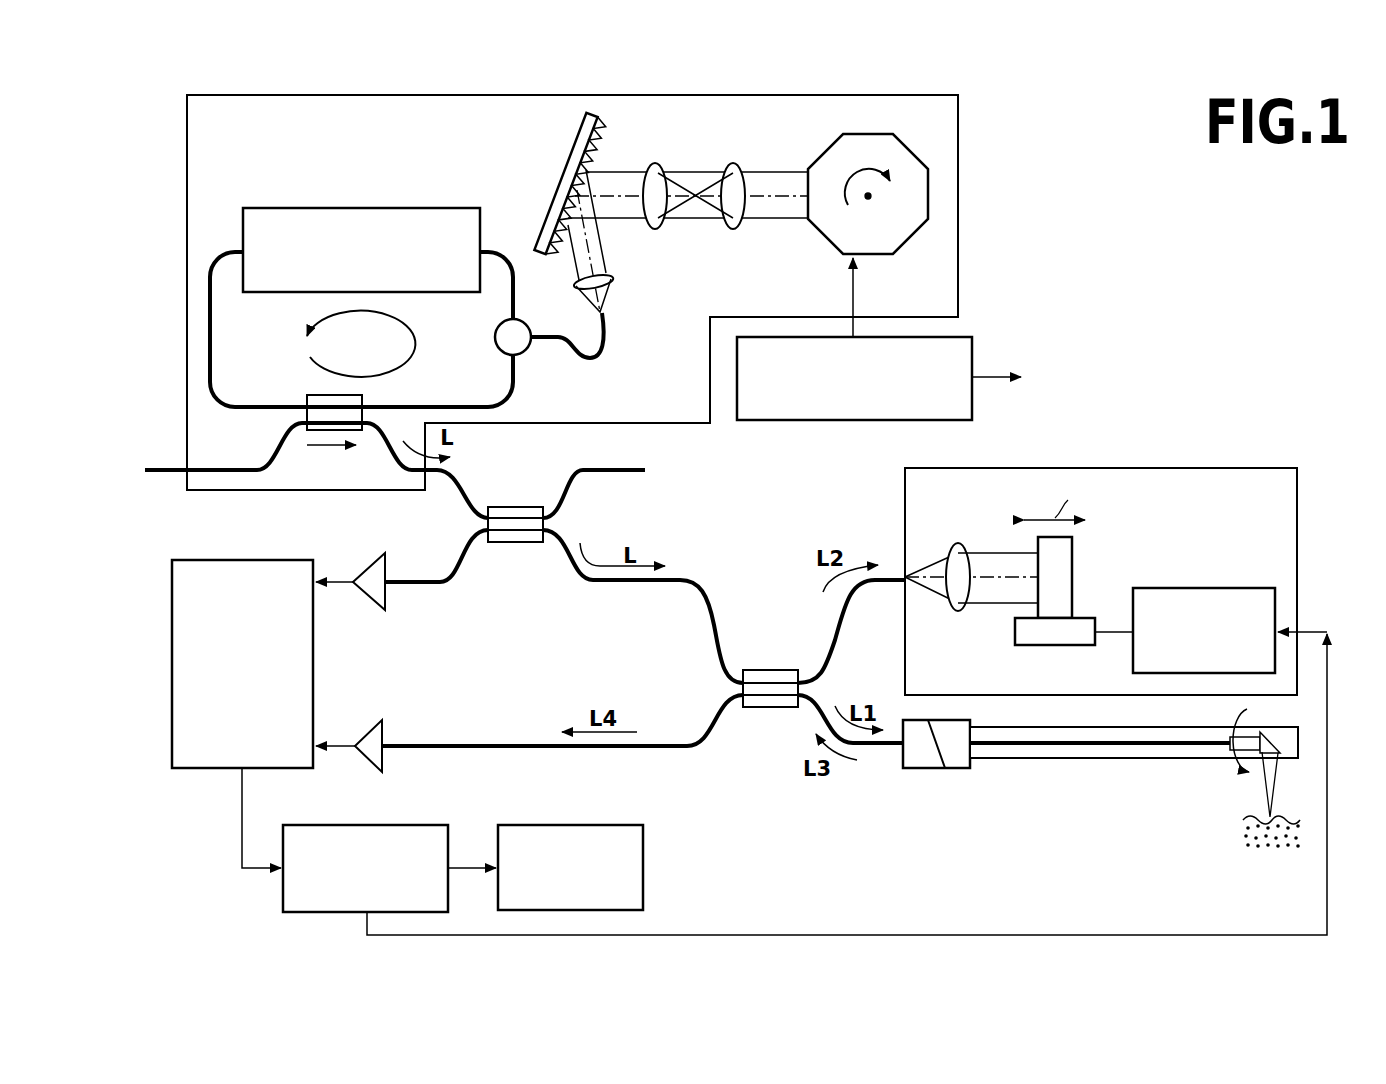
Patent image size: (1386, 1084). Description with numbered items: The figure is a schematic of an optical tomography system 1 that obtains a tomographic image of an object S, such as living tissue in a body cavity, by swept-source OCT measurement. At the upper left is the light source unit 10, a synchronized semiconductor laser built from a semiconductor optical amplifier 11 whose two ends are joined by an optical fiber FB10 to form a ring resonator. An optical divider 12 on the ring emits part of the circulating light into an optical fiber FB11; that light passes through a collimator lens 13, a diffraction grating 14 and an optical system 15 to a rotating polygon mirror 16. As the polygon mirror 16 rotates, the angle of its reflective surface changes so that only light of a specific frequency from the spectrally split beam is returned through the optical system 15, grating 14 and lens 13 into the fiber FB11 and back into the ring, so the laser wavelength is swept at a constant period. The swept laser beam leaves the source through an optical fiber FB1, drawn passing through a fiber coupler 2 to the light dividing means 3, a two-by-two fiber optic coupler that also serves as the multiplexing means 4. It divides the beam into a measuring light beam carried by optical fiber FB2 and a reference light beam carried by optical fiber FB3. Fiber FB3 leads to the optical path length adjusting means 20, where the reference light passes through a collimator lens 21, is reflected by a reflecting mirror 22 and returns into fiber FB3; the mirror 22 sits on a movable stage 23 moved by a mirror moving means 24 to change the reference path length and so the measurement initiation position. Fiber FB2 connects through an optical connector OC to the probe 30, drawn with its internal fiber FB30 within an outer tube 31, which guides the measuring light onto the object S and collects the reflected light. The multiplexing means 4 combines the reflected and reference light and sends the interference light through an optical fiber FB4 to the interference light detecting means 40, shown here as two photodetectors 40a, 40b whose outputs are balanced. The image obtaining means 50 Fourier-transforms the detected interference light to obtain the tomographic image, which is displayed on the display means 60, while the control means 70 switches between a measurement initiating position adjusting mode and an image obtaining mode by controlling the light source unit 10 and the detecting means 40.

The optical tomography system 1 is at (1124, 207).
The light source unit 10 is at (958, 195).
The semiconductor optical amplifier 11 is at (458, 208).
The optical divider 12 is at (525, 352).
The collimator lens 13 is at (616, 287).
The diffraction grating 14 is at (578, 138).
The optical system 15 is at (733, 163).
The rotating polygon mirror 16 is at (904, 254).
The optical fiber FB10 is at (209, 336).
The optical fiber FB11 is at (605, 357).
The optical fiber coupler 2 is at (523, 543).
The light dividing means 3 is at (760, 715).
The multiplexing means 4 is at (763, 708).
The optical fiber FB1 is at (457, 487).
The optical fiber FB2 is at (895, 717).
The optical fiber FB3 is at (893, 577).
The optical fiber FB4 is at (490, 745).
The optical path length adjusting means 20 is at (1297, 493).
The collimator lens 21 is at (960, 545).
The reflecting mirror 22 is at (1065, 562).
The movable stage 23 is at (1075, 640).
The mirror moving means 24 is at (1258, 588).
The probe 30 is at (1134, 771).
The probe outer tube 31 is at (1180, 760).
The probe optical fiber FB30 is at (1032, 747).
The optical connector OC is at (927, 768).
The object S is at (1285, 816).
The interference light detecting means 40 is at (190, 770).
The photodetector 40a is at (388, 598).
The photodetector 40b is at (386, 730).
The image obtaining means 50 is at (307, 825).
The display means 60 is at (521, 825).
The control means 70 is at (853, 420).